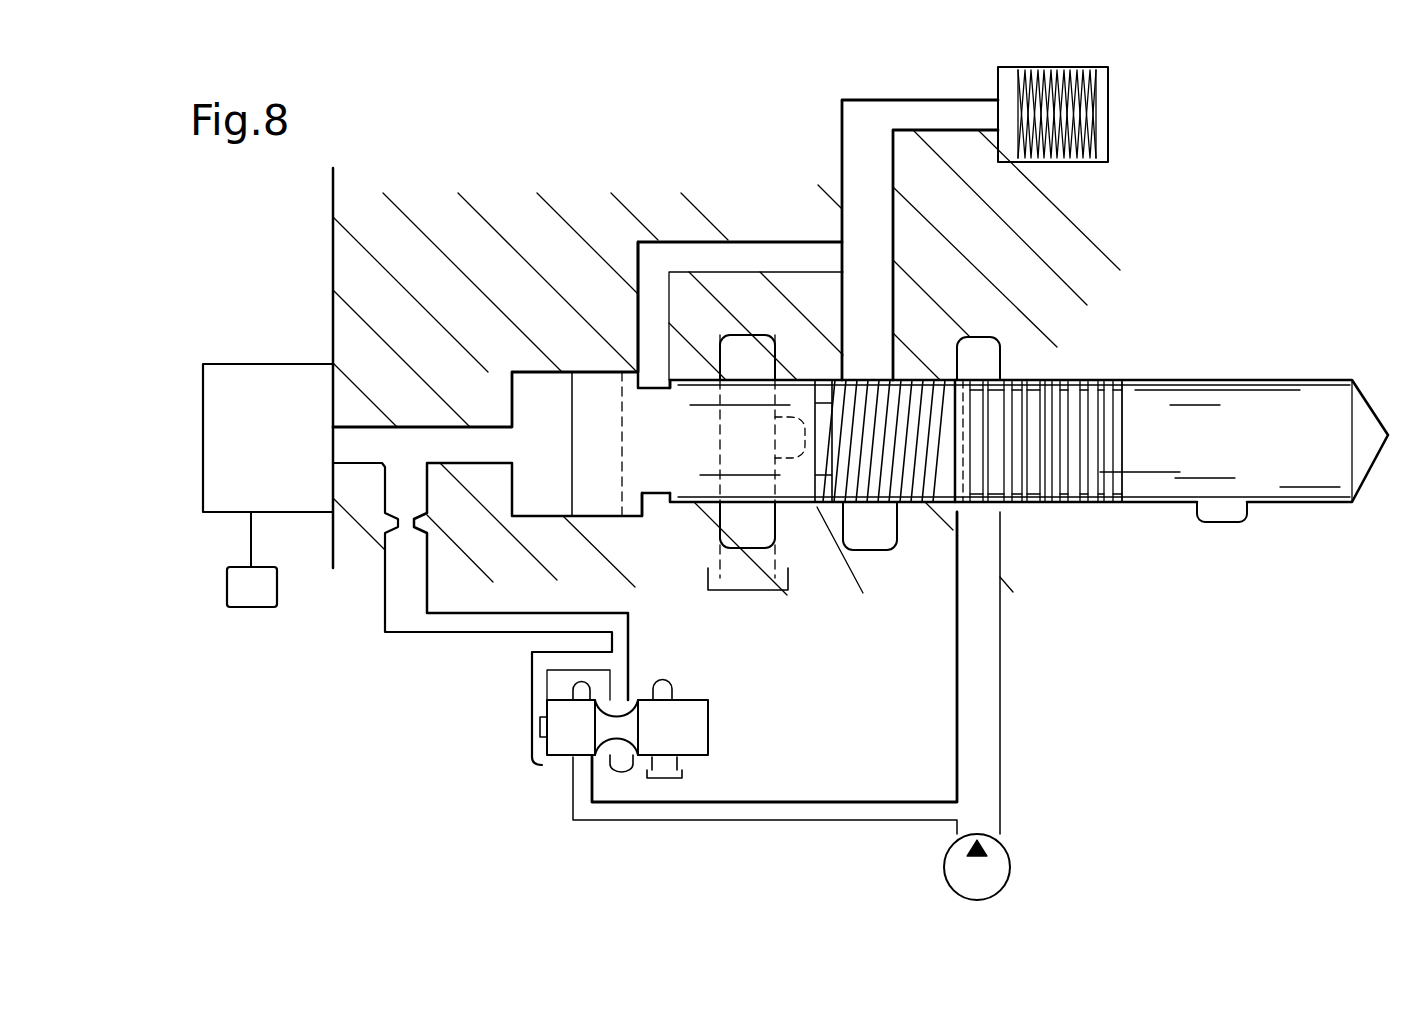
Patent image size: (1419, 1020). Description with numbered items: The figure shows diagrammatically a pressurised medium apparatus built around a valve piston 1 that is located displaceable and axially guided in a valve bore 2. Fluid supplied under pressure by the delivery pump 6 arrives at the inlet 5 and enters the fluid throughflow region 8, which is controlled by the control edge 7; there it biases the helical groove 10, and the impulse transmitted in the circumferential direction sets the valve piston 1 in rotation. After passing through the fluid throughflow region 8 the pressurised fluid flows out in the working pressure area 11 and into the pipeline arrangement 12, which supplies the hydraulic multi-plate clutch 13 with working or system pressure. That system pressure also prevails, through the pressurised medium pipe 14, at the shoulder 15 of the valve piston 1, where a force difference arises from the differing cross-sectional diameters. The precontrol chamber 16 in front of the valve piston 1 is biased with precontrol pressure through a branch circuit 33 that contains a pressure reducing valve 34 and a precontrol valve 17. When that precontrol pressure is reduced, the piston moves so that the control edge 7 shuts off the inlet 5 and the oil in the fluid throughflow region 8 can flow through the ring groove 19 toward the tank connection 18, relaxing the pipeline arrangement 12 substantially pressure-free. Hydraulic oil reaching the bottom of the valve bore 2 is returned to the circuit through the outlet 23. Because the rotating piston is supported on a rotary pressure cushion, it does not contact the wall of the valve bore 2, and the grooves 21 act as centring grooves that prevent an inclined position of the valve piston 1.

The valve piston 1 is at (1143, 360).
The valve bore 2 is at (1353, 382).
The inlet 5 is at (987, 357).
The delivery pump 6 is at (987, 877).
The control edge 7 is at (1000, 510).
The fluid throughflow region 8 is at (925, 505).
The helical groove 10 is at (933, 377).
The working pressure area 11 is at (873, 537).
The pipeline arrangement 12 is at (868, 115).
The hydraulic multi-plate clutch 13 is at (1067, 82).
The pressurised medium pipe 14 is at (682, 257).
The shoulder 15 is at (655, 515).
The precontrol chamber 16 is at (415, 368).
The precontrol valve 17 is at (238, 440).
The tank connection 18 is at (762, 575).
The ring groove 19 is at (825, 383).
The grooves 21 is at (1087, 505).
The outlet 23 is at (1220, 525).
The branch circuit 33 is at (778, 810).
The pressure reducing valve 34 is at (522, 748).